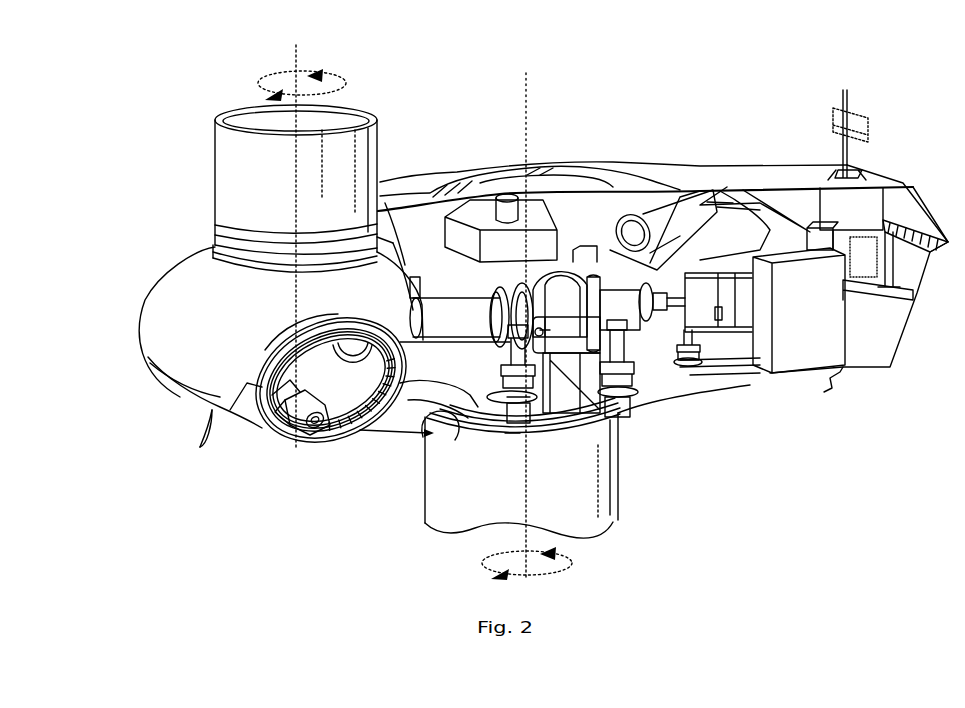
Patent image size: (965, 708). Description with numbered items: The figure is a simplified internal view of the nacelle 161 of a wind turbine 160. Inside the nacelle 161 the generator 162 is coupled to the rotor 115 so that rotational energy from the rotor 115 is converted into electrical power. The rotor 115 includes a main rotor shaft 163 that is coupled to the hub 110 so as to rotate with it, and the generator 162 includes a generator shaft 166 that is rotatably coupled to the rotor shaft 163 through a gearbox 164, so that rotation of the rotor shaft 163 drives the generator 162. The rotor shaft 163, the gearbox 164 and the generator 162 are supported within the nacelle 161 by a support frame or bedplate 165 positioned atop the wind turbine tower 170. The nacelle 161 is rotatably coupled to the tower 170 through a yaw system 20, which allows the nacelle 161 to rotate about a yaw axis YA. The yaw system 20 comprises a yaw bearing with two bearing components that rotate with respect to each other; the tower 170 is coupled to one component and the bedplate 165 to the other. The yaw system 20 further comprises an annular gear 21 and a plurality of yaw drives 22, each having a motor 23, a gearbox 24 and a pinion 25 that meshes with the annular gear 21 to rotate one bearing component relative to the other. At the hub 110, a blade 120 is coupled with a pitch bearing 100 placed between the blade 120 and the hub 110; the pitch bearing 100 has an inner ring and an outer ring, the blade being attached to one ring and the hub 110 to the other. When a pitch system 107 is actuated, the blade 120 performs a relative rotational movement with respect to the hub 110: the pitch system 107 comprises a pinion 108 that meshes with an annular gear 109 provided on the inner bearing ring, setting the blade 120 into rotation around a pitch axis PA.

The yaw system 20 is at (496, 458).
The annular gear 21 is at (452, 423).
The yaw drives 22 is at (492, 371).
The motor 23 is at (507, 397).
The gearbox 24 is at (550, 330).
The pinion 25 is at (513, 433).
The pitch bearing 100 is at (200, 447).
The pitch system 107 is at (246, 447).
The pinion 108 is at (300, 442).
The annular gear 109 is at (334, 440).
The hub 110 is at (165, 352).
The rotor 115 is at (147, 271).
The blade 120 is at (227, 176).
The wind turbine 160 is at (764, 117).
The nacelle 161 is at (443, 172).
The generator 162 is at (712, 207).
The main rotor shaft 163 is at (443, 303).
The gearbox 164 is at (592, 270).
The bedplate 165 is at (660, 403).
The generator shaft 166 is at (660, 303).
The tower 170 is at (425, 492).
The pitch axis PA is at (297, 63).
The yaw axis YA is at (527, 532).